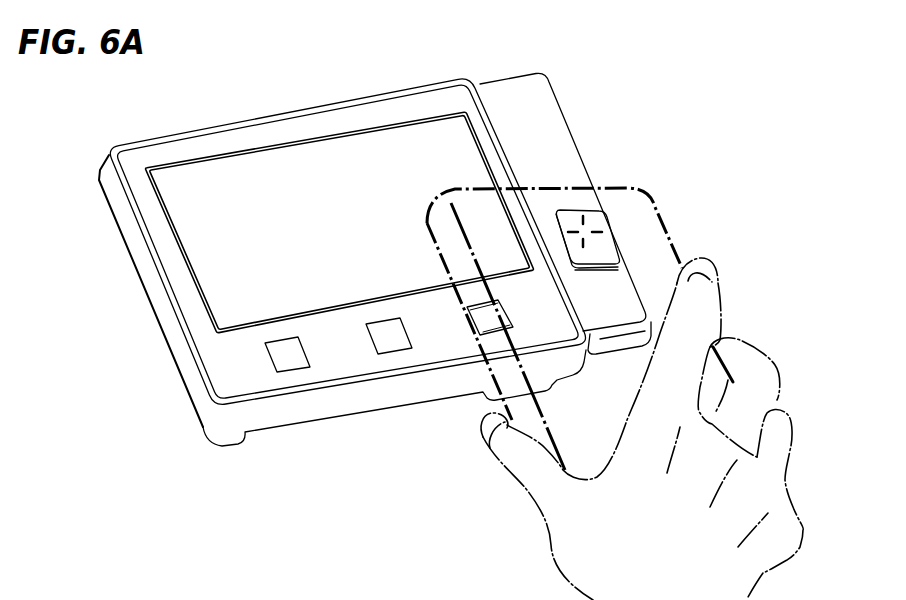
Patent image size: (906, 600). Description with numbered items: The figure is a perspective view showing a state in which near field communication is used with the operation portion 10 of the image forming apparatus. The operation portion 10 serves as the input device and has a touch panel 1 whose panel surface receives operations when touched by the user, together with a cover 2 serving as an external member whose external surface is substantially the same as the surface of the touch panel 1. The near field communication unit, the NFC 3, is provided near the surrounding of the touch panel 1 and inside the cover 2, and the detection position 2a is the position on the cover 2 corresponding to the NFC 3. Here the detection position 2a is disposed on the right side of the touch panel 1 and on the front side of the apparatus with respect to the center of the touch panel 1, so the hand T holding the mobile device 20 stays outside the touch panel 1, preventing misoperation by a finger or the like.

The operation portion 10 is at (220, 142).
The touch panel 1 is at (362, 160).
The cover 2 is at (560, 142).
The mobile device 20 is at (632, 203).
The detection position 2a is at (659, 231).
The near field communication unit 3 is at (590, 226).
The hand T is at (573, 520).